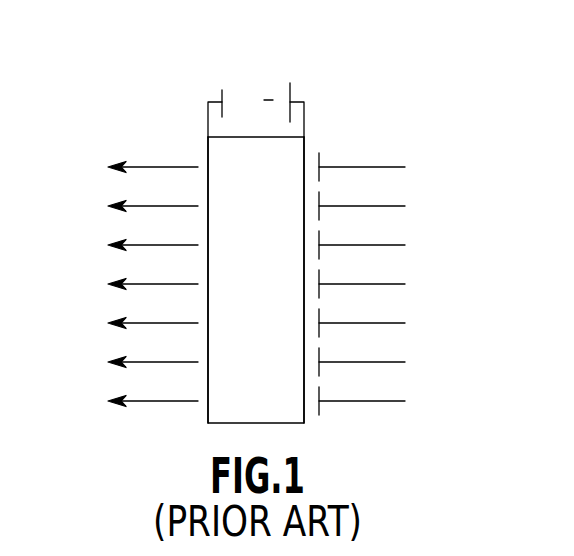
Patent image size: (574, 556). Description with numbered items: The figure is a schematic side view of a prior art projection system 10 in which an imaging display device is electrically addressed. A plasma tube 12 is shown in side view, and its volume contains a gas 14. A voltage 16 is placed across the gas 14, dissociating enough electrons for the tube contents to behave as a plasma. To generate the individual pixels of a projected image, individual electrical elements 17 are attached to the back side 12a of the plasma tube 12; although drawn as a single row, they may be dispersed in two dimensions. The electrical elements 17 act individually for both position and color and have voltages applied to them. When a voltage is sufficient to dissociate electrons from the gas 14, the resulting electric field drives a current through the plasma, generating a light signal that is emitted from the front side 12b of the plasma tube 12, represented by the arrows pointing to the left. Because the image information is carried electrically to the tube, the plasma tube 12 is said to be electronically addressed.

The projection system 10 is at (58, 284).
The plasma tube 12 is at (207, 148).
The back side 12a is at (305, 186).
The front side 12b is at (208, 378).
The gas 14 is at (288, 170).
The voltage 16 is at (258, 92).
The electrical elements 17 is at (378, 206).